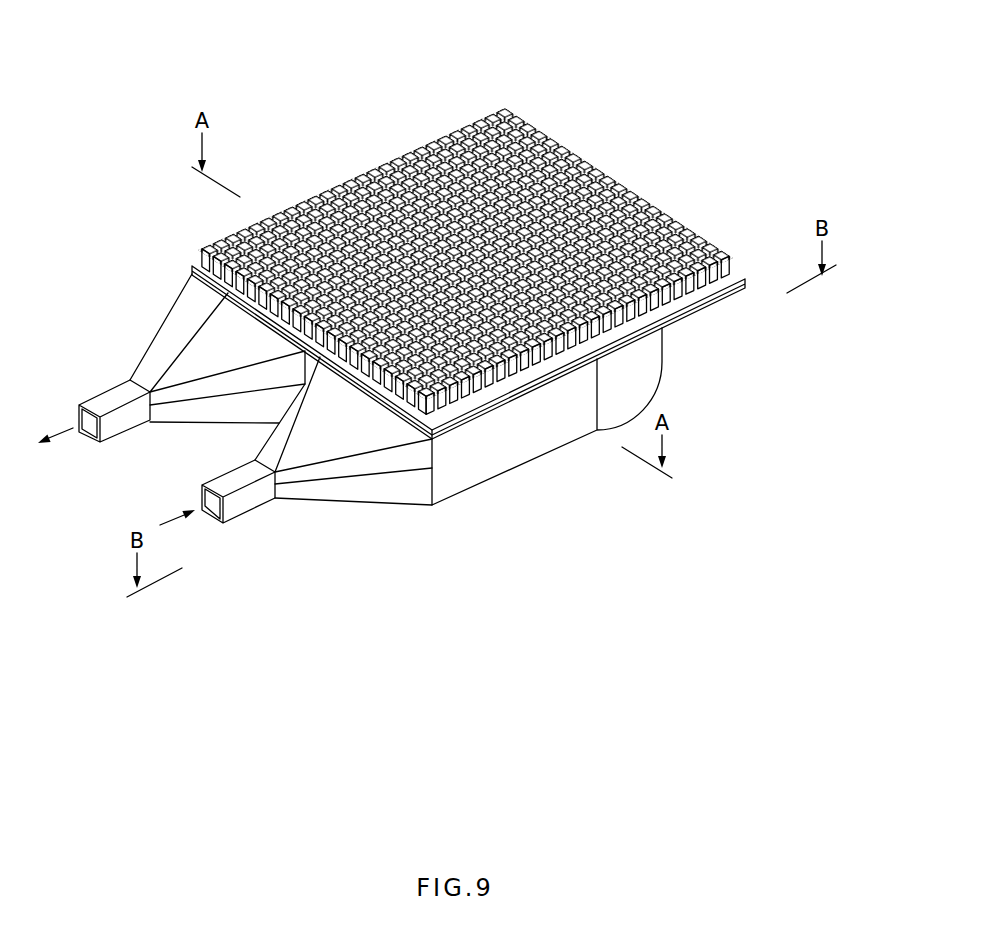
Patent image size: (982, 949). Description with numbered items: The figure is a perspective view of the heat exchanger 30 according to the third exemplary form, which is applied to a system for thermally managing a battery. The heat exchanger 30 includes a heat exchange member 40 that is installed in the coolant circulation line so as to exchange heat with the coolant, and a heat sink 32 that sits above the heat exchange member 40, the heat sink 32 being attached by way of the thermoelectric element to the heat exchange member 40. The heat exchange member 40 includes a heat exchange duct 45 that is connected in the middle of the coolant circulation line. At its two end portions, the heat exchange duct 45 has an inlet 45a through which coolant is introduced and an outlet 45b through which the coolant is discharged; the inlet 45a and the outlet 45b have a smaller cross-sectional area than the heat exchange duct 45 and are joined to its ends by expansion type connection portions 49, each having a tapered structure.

The heat exchanger 30 is at (109, 45).
The heat sink 32 is at (628, 190).
The heat exchange member 40 is at (391, 413).
The heat exchange duct 45 is at (495, 477).
The inlet 45a is at (247, 513).
The outlet 45b is at (107, 392).
The expansion type connection portion 49 is at (190, 413).